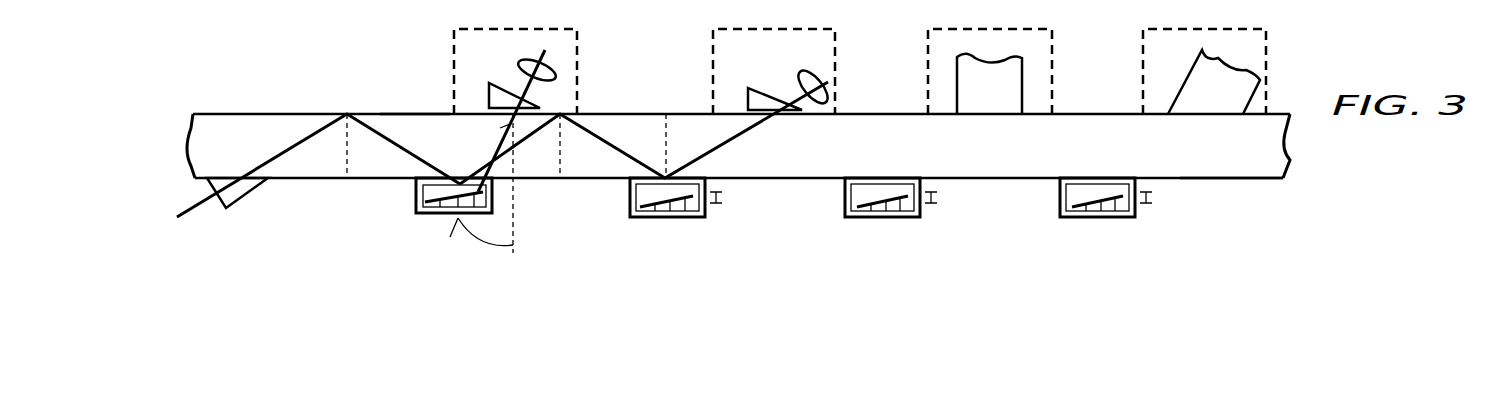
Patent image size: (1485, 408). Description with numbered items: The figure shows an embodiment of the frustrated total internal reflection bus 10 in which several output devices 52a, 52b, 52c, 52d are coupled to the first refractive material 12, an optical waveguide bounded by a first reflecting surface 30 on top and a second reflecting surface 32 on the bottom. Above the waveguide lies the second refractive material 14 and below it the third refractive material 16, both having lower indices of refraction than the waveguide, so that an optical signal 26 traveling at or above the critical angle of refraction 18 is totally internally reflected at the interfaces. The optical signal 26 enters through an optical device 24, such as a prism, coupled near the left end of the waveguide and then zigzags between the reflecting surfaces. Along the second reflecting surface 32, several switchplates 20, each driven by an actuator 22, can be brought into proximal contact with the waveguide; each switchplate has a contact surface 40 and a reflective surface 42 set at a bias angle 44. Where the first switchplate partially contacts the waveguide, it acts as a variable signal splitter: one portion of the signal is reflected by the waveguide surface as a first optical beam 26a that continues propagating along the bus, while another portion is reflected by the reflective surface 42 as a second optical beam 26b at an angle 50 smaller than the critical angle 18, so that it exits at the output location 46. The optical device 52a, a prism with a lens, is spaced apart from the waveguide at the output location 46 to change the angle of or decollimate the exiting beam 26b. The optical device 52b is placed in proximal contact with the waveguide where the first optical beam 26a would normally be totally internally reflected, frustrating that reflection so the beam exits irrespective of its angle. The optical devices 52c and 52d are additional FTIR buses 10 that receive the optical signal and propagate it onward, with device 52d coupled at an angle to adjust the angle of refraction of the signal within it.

The frustrated total internal reflection (FTIR) bus 10 is at (1001, 104).
The first refractive material 12 is at (270, 147).
The second refractive material 14 is at (337, 67).
The third refractive material 16 is at (339, 252).
The critical angle of refraction 18 is at (340, 150).
The switchplate 20 is at (630, 200).
The actuator 22 is at (432, 213).
The optical device 24 is at (230, 210).
The optical signal 26 is at (400, 140).
The first optical beam 26a is at (605, 128).
The second optical beam 26b is at (522, 85).
The first reflecting surface 30 is at (416, 118).
The second reflecting surface 32 is at (1232, 178).
The contact surface 40 is at (413, 180).
The reflective surface 42 is at (663, 210).
The bias angle 44 is at (722, 197).
The output location 46 is at (500, 128).
The angle 50 is at (483, 245).
The optical device 52a is at (579, 76).
The optical device 52b is at (838, 76).
The optical device 52c is at (1054, 76).
The optical device 52d is at (1270, 76).